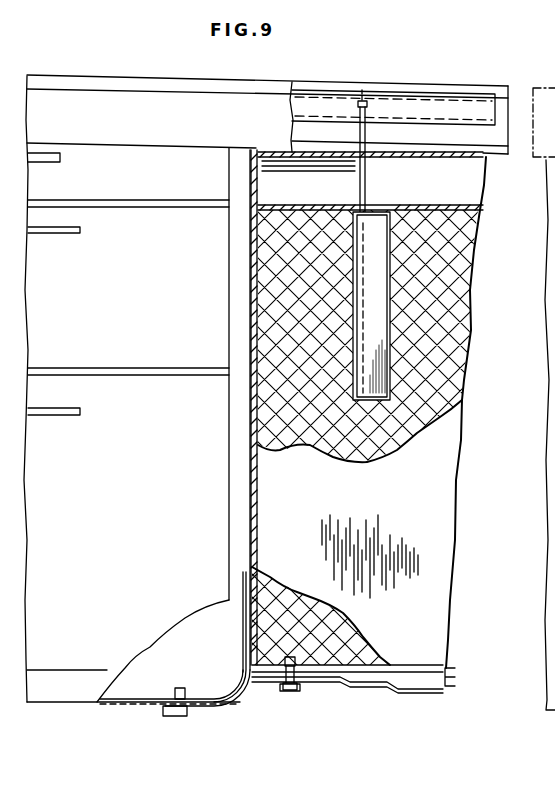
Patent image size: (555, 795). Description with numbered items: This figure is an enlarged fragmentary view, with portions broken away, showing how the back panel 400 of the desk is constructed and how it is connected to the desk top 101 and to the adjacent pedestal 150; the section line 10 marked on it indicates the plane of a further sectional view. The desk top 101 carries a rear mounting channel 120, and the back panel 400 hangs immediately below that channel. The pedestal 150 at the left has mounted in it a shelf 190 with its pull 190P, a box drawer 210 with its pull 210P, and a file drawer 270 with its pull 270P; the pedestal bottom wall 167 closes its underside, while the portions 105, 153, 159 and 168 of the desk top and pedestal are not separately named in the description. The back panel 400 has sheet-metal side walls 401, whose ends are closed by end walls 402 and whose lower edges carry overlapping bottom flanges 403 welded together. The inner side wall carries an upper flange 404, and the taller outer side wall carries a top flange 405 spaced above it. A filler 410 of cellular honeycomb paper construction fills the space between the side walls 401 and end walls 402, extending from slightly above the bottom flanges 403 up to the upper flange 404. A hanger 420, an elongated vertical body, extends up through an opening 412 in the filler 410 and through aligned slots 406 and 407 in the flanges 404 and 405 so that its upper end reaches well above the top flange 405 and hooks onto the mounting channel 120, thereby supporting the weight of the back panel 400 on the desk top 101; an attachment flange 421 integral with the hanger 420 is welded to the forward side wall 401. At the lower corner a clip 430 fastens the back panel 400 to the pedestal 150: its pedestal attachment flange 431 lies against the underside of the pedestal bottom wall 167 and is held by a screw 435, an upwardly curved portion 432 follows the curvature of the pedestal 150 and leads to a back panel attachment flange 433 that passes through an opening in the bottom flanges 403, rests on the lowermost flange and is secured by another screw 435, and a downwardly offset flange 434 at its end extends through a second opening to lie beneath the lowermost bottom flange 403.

The section line 10- 10 is at (355, 48).
The desk top 101 is at (141, 70).
The top wall panel 105 is at (80, 108).
The rear mounting channel 120 is at (457, 103).
The pedestal 150 is at (76, 716).
The liner flange 153 is at (242, 630).
The inner wall 159 is at (238, 483).
The pedestal bottom wall 167 is at (138, 700).
The bottom edge member 168 is at (45, 697).
The shelf 190 is at (167, 186).
The pull 190P is at (53, 163).
The box drawer 210 is at (113, 304).
The pull 210P is at (83, 230).
The file drawer 270 is at (97, 549).
The pull 270P is at (76, 413).
The back panel 400 is at (413, 580).
The side walls 401 is at (467, 178).
The end walls 402 is at (252, 403).
The bottom flanges 403 is at (268, 672).
The upper flange 404 is at (463, 203).
The top flange 405 is at (276, 148).
The slot 406 is at (365, 210).
The slot 407 is at (360, 150).
The filler 410 is at (255, 305).
The opening 412 is at (390, 323).
The hanger 420 is at (348, 179).
The attachment flange 421 is at (377, 295).
The clip 430 is at (266, 700).
The pedestal attachment flange 431 is at (205, 712).
The upwardly curved portion 432 is at (250, 705).
The back panel attachment flange 433 is at (312, 673).
The offset flange 434 is at (397, 690).
The screw 435 is at (173, 713).